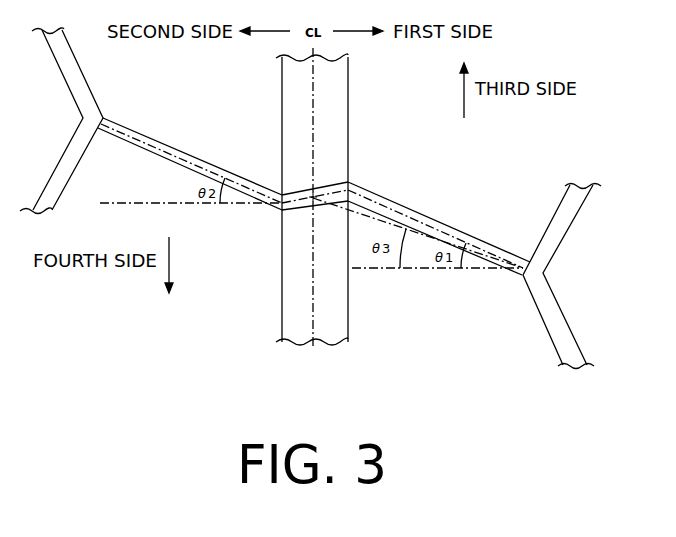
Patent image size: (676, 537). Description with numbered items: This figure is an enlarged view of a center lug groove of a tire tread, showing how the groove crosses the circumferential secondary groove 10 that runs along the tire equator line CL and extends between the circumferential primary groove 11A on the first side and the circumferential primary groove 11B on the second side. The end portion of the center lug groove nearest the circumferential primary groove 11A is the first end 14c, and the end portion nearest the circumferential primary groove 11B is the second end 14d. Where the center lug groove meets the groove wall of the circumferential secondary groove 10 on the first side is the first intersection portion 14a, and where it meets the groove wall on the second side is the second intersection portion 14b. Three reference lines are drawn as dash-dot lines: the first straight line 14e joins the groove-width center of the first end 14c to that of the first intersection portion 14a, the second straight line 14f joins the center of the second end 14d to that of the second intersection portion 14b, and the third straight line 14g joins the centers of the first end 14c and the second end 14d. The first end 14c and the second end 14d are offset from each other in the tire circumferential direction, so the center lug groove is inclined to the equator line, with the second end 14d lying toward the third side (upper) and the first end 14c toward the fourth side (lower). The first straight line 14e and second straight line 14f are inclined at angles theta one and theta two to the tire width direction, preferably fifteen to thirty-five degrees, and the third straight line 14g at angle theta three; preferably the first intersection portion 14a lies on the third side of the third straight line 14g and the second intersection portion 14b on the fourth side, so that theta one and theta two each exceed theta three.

The circumferential secondary groove 10 is at (318, 97).
The circumferential primary groove 11A is at (568, 212).
The circumferential primary groove 11B is at (68, 66).
The first intersection portion 14a is at (349, 182).
The second intersection portion 14b is at (281, 211).
The first end 14c is at (527, 263).
The second end 14d is at (100, 130).
The first straight line 14e is at (423, 225).
The second straight line 14f is at (190, 165).
The third straight line 14g is at (243, 170).